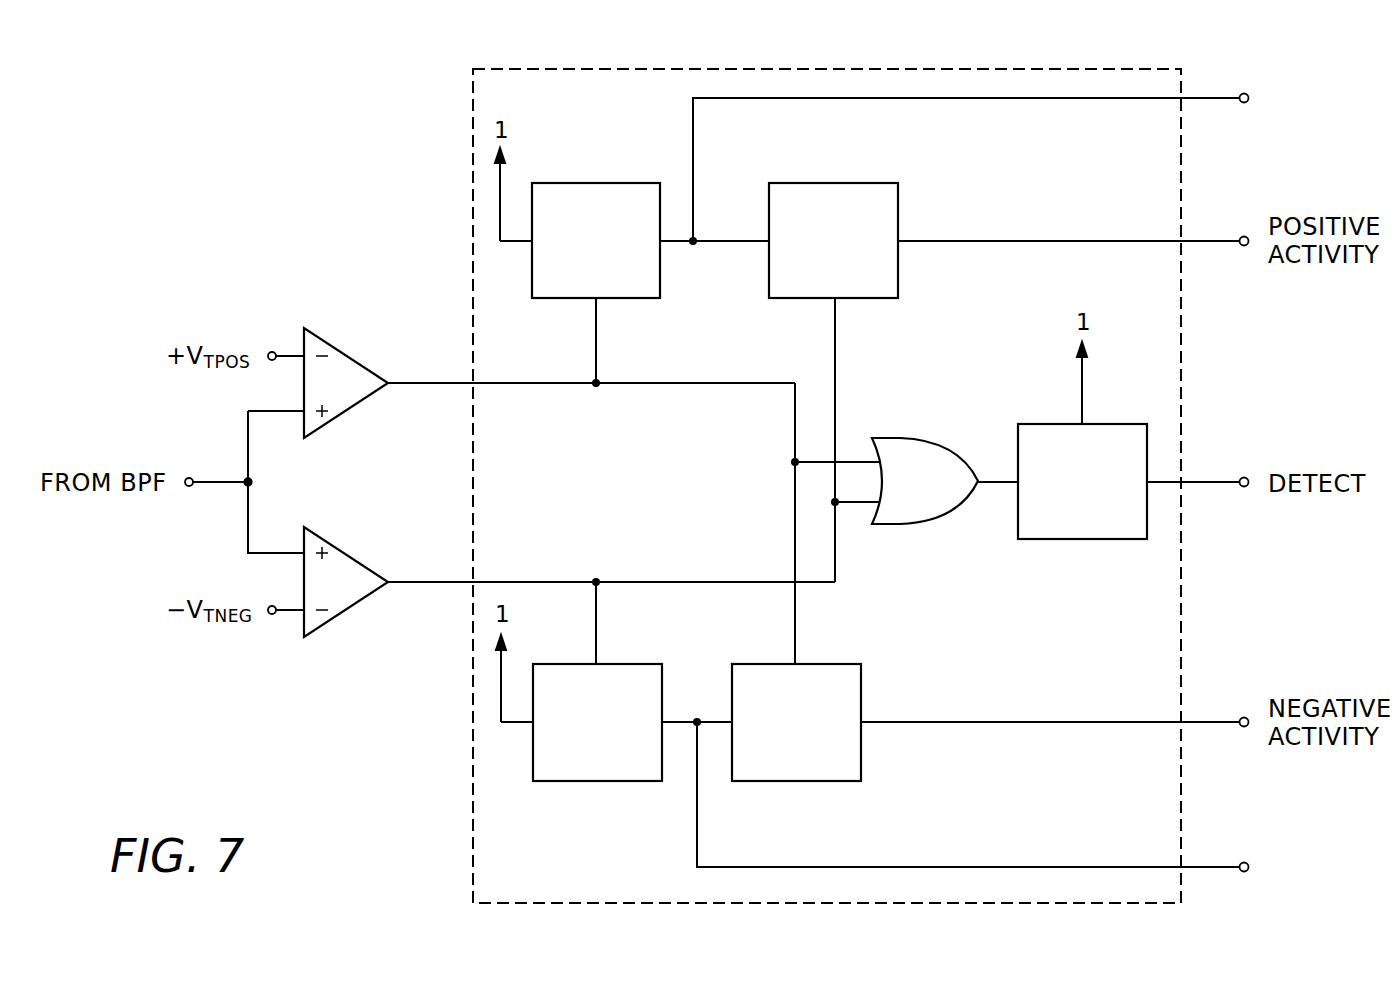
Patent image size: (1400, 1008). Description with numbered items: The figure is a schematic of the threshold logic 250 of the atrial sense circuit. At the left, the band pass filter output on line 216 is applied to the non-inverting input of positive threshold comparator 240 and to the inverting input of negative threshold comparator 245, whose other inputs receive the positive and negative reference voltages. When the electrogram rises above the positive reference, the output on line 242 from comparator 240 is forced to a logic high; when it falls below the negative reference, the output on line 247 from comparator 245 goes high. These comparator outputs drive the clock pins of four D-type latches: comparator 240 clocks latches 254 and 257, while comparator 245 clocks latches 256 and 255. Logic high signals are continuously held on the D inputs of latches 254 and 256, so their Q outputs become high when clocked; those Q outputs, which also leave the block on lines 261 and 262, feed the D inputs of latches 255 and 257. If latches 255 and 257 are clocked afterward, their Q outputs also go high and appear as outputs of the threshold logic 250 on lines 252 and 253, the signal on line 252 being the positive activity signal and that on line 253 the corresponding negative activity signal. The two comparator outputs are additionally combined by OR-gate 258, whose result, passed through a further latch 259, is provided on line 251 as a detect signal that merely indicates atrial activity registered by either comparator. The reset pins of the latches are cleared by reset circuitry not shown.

The line 216 is at (212, 484).
The comparator 240 is at (355, 353).
The line 242 is at (440, 385).
The comparator 245 is at (355, 607).
The line 247 is at (440, 580).
The threshold logic 250 is at (472, 820).
The line 251 is at (1210, 482).
The line 252 is at (1210, 241).
The line 253 is at (1210, 722).
The latch 254 is at (592, 183).
The latch 255 is at (832, 183).
The latch 256 is at (596, 781).
The latch 257 is at (796, 781).
The OR-gate 258 is at (900, 438).
The detect D flip-flop 259 is at (1084, 540).
The positive reset output 261 is at (1210, 98).
The negative reset output 262 is at (1210, 867).